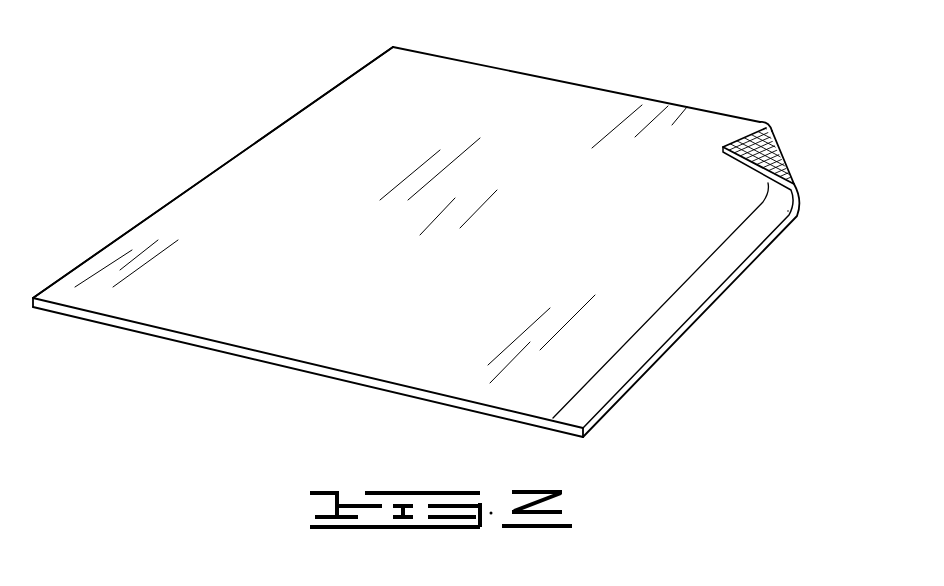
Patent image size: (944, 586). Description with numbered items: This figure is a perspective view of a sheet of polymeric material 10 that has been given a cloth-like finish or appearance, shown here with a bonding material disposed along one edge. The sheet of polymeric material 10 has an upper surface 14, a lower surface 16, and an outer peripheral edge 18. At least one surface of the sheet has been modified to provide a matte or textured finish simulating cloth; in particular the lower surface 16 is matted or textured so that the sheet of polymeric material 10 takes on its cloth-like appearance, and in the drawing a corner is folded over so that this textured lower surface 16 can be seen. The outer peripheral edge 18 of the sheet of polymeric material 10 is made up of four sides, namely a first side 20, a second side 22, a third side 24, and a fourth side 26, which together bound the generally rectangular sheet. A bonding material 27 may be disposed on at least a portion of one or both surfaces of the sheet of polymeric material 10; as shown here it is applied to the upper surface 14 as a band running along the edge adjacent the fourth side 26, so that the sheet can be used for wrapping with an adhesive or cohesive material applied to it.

The sheet of polymeric material 10 is at (697, 44).
The upper surface 14 is at (697, 137).
The lower surface 16 is at (768, 154).
The outer peripheral edge 18 is at (723, 292).
The first side 20 is at (260, 358).
The second side 22 is at (571, 83).
The third side 24 is at (183, 193).
The fourth side 26 is at (637, 378).
The bonding material 27 is at (657, 332).